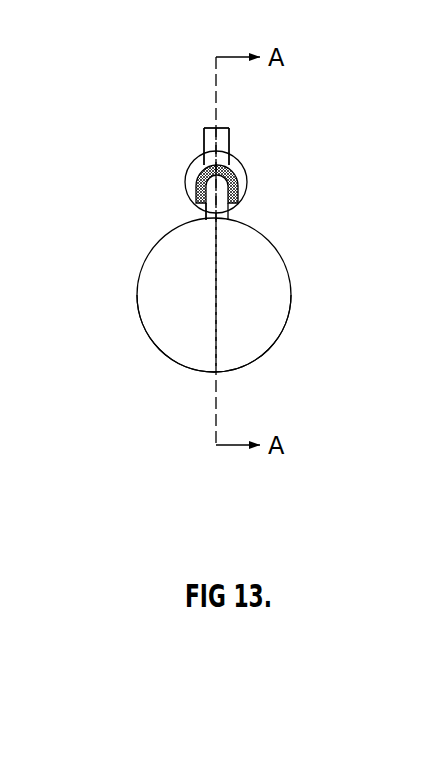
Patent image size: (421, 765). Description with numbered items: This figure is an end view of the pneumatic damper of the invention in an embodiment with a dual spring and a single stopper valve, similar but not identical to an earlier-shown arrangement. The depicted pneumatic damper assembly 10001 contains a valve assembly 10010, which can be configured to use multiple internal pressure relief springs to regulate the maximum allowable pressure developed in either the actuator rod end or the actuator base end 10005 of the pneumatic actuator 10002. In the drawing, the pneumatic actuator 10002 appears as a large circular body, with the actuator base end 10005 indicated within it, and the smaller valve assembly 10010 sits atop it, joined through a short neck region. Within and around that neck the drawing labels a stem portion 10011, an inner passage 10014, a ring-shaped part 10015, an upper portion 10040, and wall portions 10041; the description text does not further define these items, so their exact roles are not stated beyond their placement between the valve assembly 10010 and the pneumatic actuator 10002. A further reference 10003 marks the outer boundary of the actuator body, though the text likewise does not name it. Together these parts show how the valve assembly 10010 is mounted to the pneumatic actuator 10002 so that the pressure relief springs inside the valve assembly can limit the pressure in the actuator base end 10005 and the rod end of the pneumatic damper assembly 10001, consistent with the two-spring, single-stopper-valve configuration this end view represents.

The pneumatic damper assembly 10001 is at (278, 202).
The pneumatic actuator 10002 is at (278, 368).
The outer wall of bulb 10003 is at (292, 317).
The actuator base end 10005 is at (185, 322).
The valve assembly 10010 is at (253, 162).
The stem tube 10011 is at (192, 158).
The inner passage 10014 is at (228, 201).
The seal ring 10015 is at (192, 176).
The connector 10040 is at (227, 117).
The tube wall 10041 is at (198, 123).